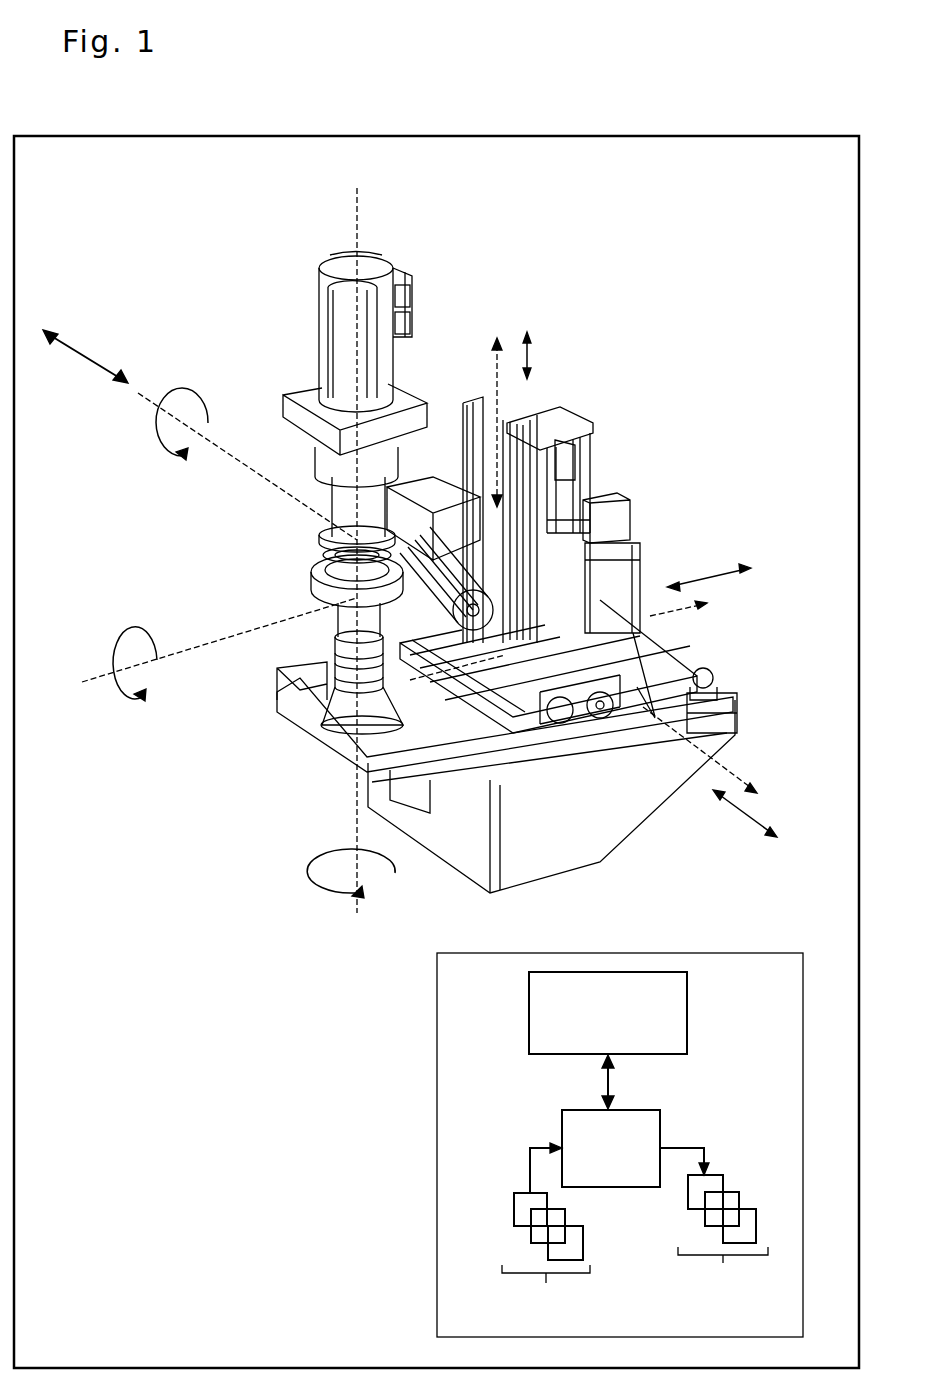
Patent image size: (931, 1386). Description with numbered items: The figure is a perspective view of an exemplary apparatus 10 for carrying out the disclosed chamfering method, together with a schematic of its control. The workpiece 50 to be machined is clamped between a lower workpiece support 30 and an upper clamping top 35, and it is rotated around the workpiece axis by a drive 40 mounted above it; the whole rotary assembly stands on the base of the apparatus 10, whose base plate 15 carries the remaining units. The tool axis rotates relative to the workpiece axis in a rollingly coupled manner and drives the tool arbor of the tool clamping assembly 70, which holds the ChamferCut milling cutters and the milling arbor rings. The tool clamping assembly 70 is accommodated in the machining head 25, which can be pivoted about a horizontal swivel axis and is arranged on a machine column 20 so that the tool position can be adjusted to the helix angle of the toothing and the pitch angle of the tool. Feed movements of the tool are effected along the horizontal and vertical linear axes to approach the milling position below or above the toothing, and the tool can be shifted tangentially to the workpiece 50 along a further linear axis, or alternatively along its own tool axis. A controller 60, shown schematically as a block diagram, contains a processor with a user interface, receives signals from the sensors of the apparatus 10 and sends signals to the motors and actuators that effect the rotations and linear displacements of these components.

The apparatus 10 is at (727, 338).
The base plate 15 is at (358, 765).
The machine column 20 is at (563, 577).
The machining head 25 is at (337, 561).
The workpiece support 30 is at (333, 655).
The upper clamping top 35 is at (336, 538).
The drive 40 is at (319, 340).
The workpiece 50 is at (312, 597).
The controller 60 is at (767, 1011).
The tool clamping assembly 70 is at (440, 560).